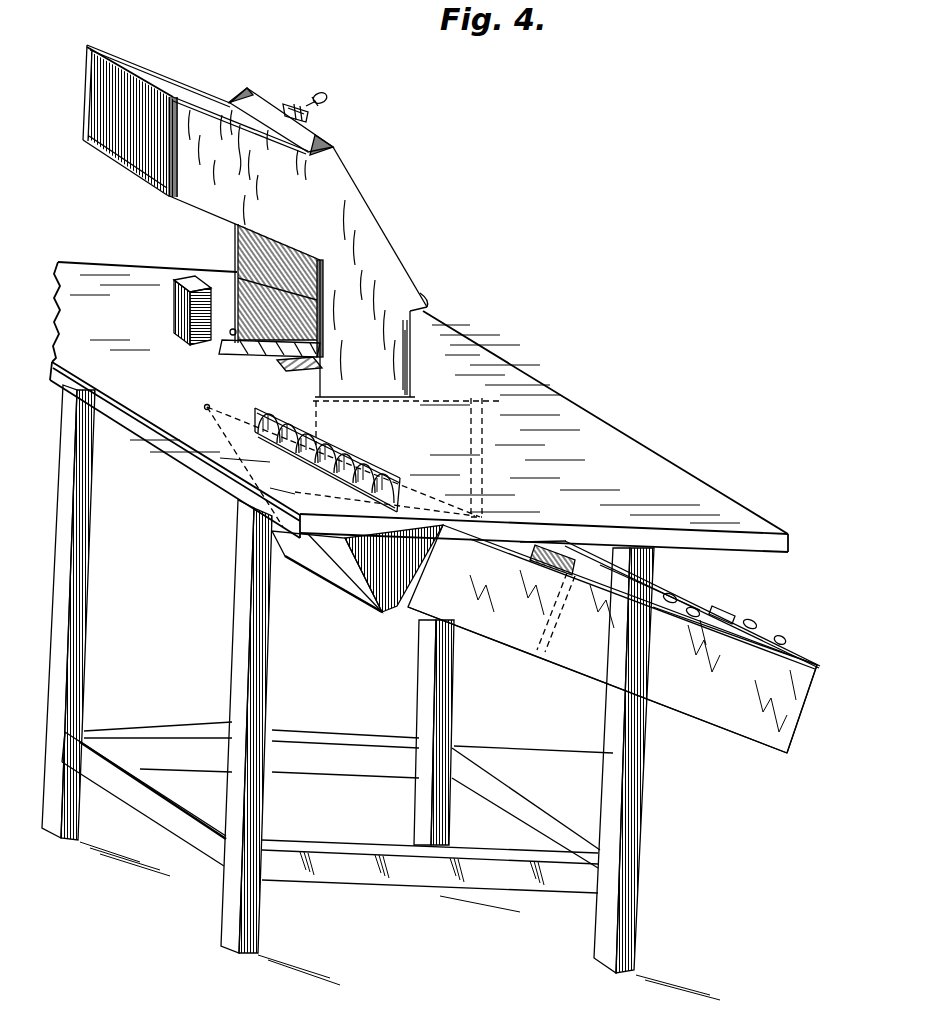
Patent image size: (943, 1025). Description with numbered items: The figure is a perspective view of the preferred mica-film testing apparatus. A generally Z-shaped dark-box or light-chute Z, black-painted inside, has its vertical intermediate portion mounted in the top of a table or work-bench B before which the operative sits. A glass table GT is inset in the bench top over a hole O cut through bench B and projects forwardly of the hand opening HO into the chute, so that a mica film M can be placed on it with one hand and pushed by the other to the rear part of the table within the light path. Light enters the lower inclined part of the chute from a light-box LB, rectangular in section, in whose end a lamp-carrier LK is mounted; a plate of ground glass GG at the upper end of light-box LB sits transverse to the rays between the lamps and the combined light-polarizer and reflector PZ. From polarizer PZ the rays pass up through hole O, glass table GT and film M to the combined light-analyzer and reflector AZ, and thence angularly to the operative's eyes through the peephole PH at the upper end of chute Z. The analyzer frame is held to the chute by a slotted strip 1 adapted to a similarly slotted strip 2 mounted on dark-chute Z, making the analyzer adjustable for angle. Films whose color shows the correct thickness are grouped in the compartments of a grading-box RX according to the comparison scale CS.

The table or work-bench B is at (565, 404).
The dark-box or light-chute Z is at (188, 97).
The combined light-analyzer and reflector AZ is at (392, 231).
The peephole PH is at (134, 157).
The slotted strip 1 is at (306, 112).
The slotted strip 2 is at (288, 104).
The mica film M is at (173, 306).
The hand opening HO is at (232, 333).
The comparison scale CS is at (292, 320).
The hole O is at (232, 355).
The glass table GT is at (294, 378).
The grading-box RX is at (352, 455).
The combined light-polarizer and reflector PZ is at (324, 562).
The ground glass GG is at (578, 548).
The lamp-carrier LK is at (778, 634).
The light-box LB is at (612, 680).